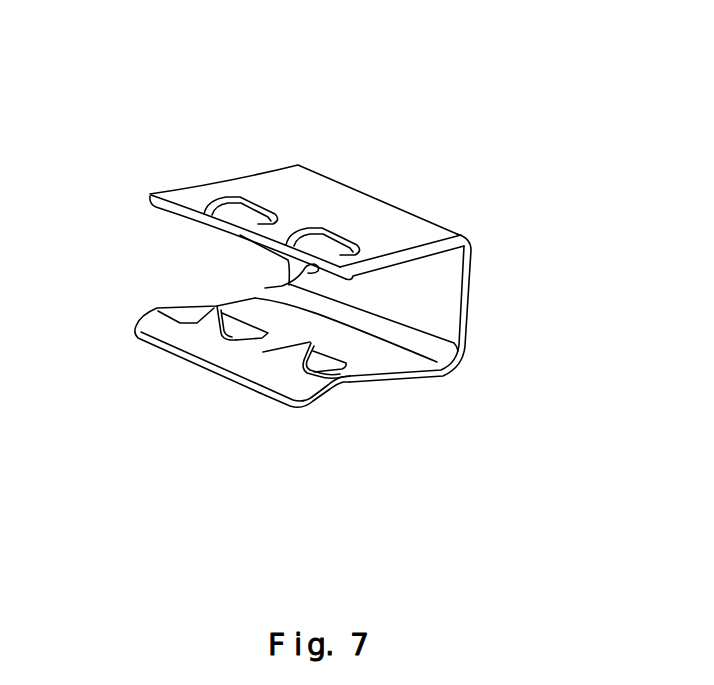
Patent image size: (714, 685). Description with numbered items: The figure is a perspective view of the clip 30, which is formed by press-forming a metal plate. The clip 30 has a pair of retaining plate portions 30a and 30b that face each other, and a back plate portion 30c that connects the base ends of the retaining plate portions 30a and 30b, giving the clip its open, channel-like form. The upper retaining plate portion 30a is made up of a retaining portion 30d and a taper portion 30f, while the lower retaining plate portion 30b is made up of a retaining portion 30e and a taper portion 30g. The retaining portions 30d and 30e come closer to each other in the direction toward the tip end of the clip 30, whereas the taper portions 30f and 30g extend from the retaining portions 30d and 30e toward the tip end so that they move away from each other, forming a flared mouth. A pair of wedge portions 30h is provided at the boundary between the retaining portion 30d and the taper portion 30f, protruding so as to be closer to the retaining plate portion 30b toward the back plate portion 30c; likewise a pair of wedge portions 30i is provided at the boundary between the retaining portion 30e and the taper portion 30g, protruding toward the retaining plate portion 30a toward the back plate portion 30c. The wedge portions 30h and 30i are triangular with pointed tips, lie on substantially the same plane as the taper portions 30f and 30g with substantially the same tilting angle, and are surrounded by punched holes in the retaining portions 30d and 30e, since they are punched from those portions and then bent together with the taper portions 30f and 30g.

The clip 30 is at (466, 234).
The retaining plate portion 30a is at (357, 47).
The retaining plate portion 30b is at (389, 516).
The back plate portion 30c is at (472, 299).
The retaining portion 30d is at (297, 175).
The retaining portion 30e is at (400, 380).
The taper portion 30f is at (150, 193).
The taper portion 30g is at (268, 400).
The wedge portions 30h is at (265, 288).
The wedge portions 30i is at (311, 343).